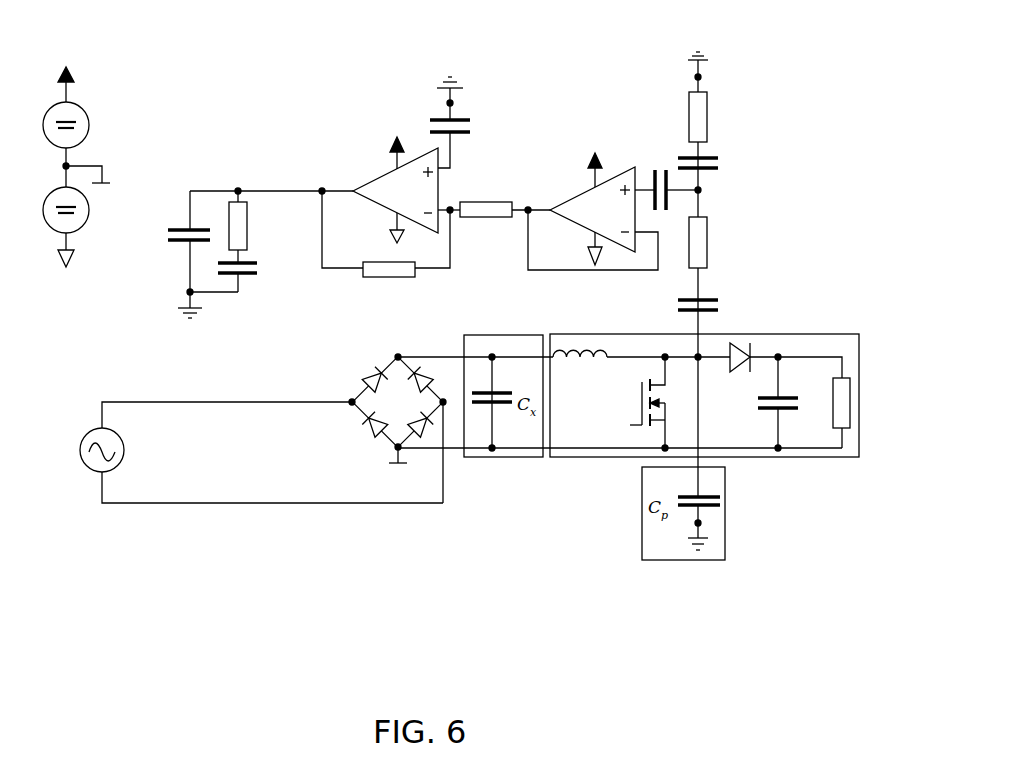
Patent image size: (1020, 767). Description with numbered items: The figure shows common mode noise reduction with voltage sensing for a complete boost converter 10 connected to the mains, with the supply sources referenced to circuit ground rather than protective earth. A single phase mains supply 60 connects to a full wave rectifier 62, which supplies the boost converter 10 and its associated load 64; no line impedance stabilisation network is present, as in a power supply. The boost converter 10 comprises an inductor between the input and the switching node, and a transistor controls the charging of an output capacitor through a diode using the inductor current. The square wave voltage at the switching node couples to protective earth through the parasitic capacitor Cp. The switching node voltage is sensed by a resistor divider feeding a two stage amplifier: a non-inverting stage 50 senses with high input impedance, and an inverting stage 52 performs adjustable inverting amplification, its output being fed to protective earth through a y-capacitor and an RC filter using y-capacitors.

The converter stage 10 is at (704, 398).
The non-inverting stage 50 is at (771, 156).
The inverting stage 52 is at (531, 117).
The single phase mains supply 60 is at (125, 450).
The full wave rectifier 62 is at (353, 431).
The load 64 is at (833, 413).